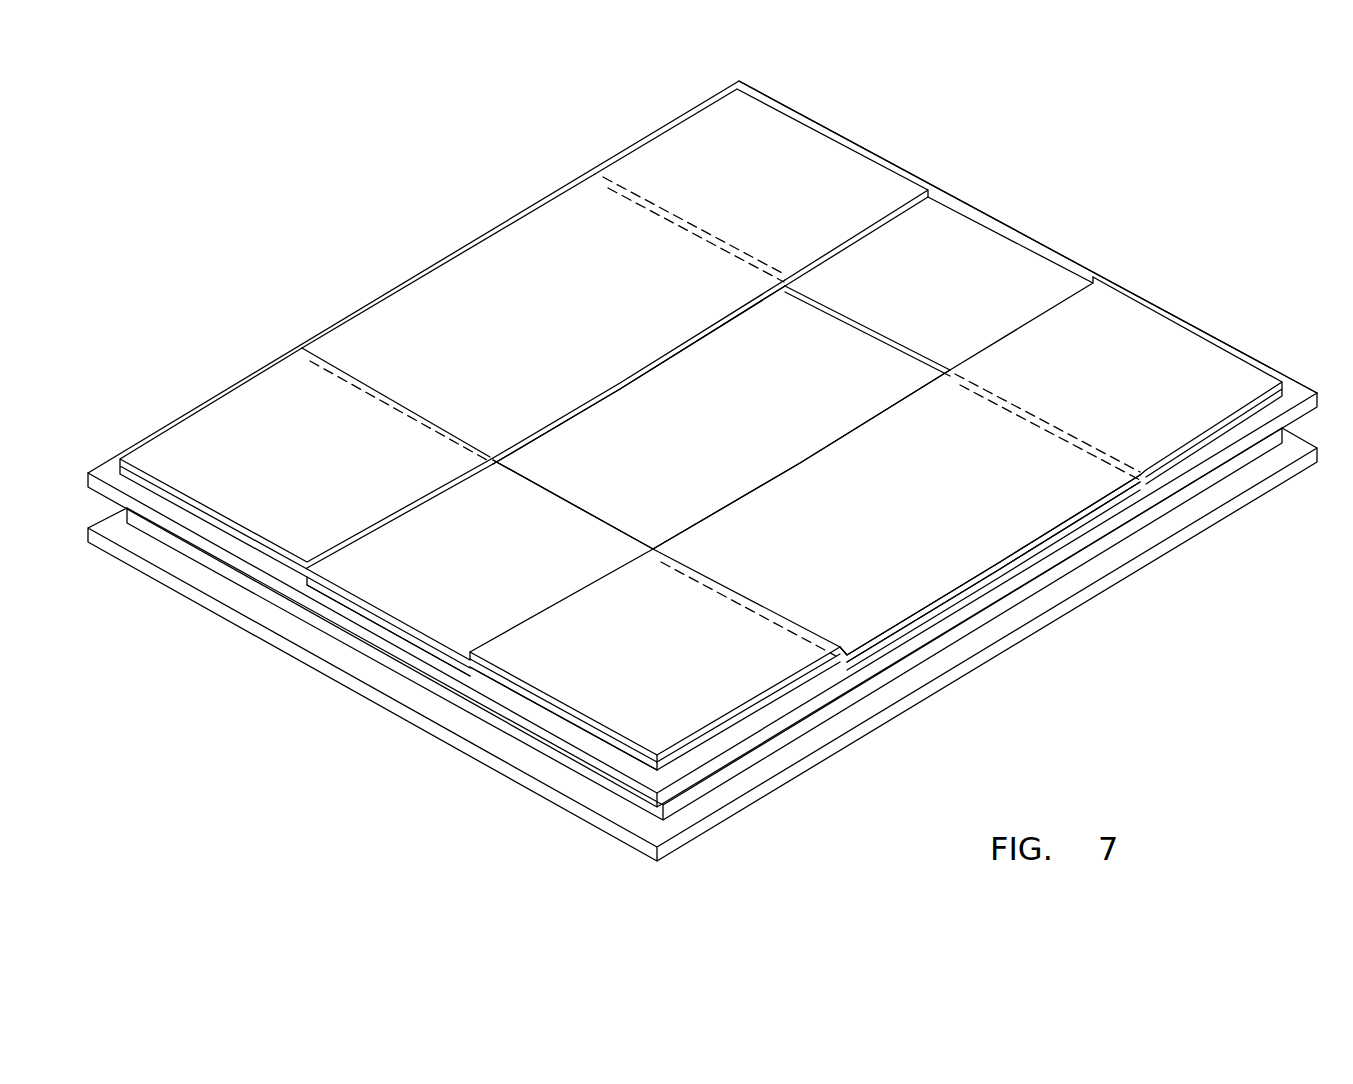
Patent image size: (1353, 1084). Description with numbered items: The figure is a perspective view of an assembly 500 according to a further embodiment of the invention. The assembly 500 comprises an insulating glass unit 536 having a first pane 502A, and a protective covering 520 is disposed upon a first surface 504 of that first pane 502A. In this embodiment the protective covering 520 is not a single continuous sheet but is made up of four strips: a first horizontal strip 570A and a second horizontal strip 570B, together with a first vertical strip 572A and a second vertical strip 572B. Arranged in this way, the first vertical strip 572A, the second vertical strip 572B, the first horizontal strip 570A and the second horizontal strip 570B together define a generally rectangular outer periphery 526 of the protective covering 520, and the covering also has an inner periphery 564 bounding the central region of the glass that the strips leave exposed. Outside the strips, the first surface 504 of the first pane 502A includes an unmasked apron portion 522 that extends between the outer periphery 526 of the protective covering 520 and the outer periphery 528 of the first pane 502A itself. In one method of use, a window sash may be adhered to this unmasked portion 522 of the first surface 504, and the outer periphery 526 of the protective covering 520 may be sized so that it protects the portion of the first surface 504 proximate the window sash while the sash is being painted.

The assembly 500 is at (702, 644).
The first pane 502A is at (610, 773).
The first surface 504 is at (720, 403).
The protective covering 520 is at (406, 632).
The unmasked portion 522 is at (946, 200).
The outer periphery 526 is at (877, 640).
The outer periphery 528 is at (1066, 257).
The insulating glass unit 536 is at (1137, 575).
The inner periphery 564 is at (560, 504).
The first horizontal strip 570A is at (410, 576).
The second horizontal strip 570B is at (979, 280).
The first vertical strip 572A is at (933, 570).
The second vertical strip 572B is at (447, 306).